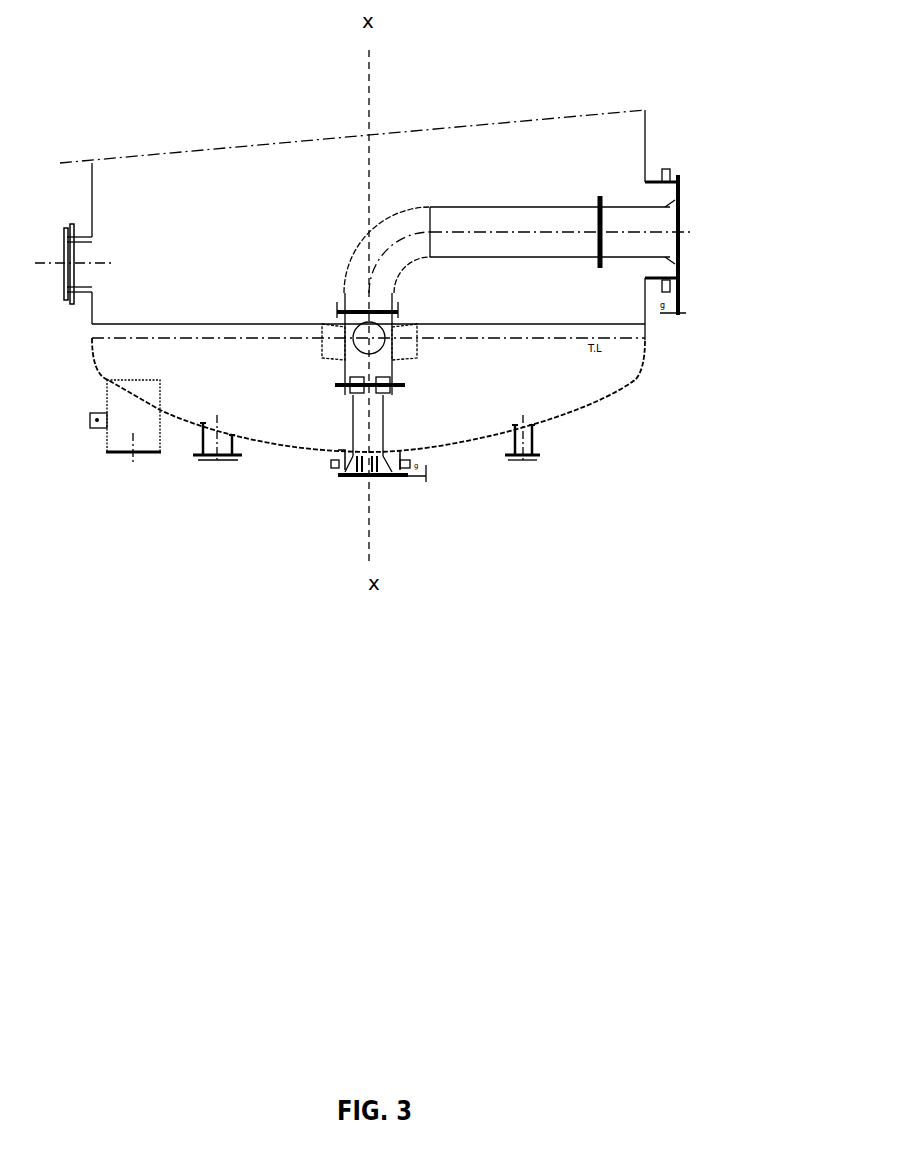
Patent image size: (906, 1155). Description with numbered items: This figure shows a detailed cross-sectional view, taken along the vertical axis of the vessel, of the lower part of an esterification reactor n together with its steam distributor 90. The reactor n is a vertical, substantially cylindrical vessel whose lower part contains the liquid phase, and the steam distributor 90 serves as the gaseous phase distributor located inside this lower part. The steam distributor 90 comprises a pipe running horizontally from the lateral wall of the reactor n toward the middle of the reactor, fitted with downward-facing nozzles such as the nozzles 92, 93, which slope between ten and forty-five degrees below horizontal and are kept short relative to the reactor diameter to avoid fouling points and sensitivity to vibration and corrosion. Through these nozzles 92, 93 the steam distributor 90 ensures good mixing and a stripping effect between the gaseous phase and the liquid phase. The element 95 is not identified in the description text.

The steam distributor 90 is at (617, 195).
The nozzle 92 is at (323, 350).
The nozzle 93 is at (412, 352).
The pipe elbow 95 is at (385, 238).
The esterification reactor n is at (635, 398).